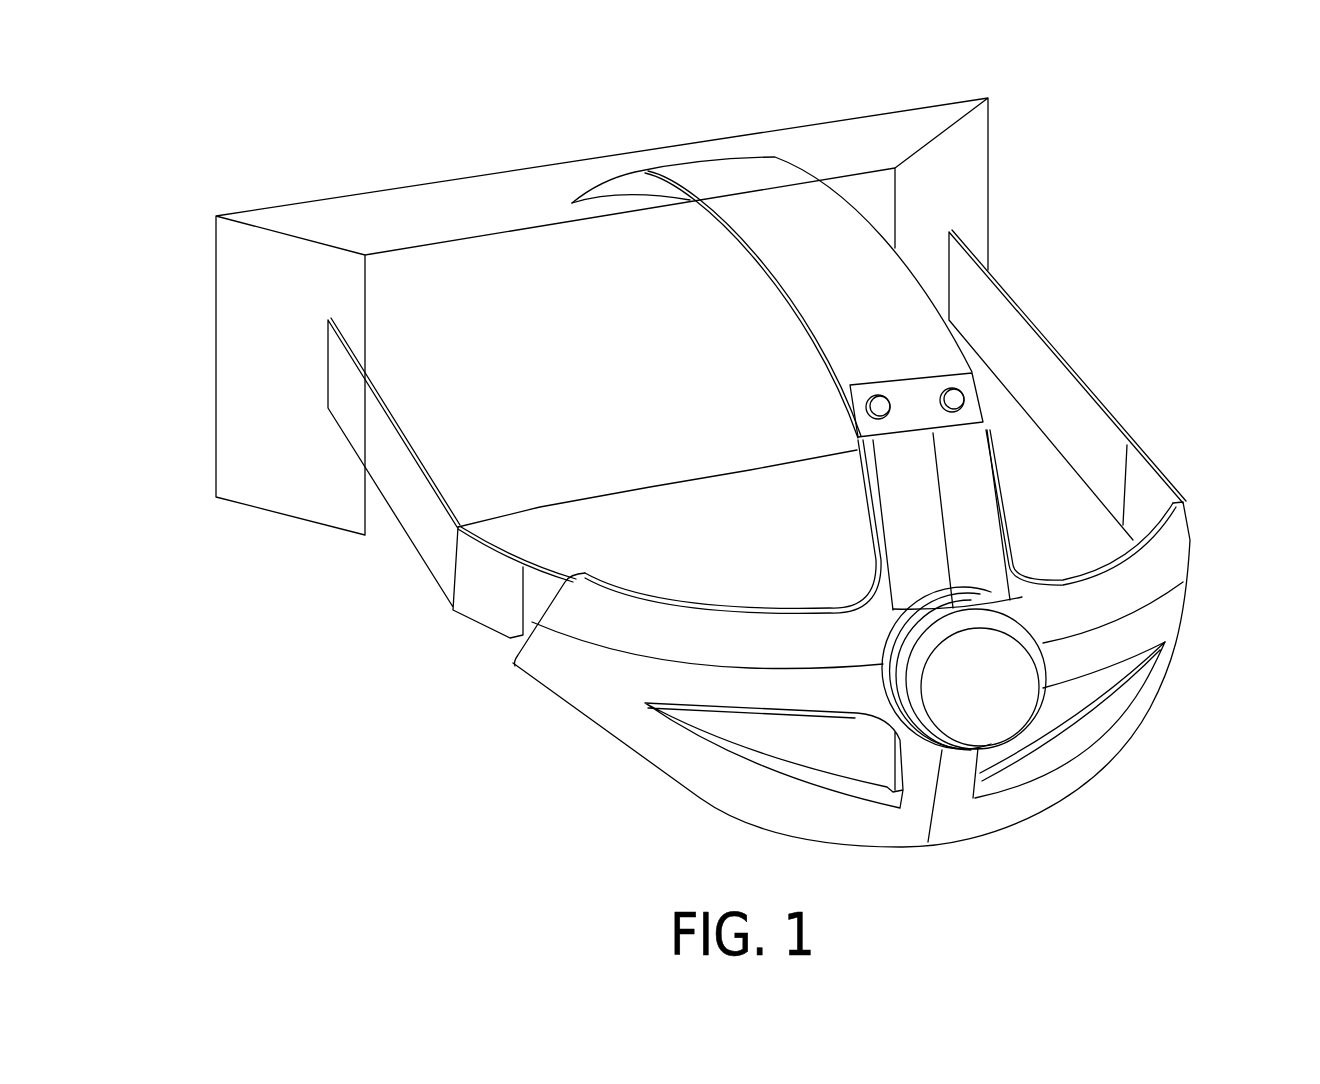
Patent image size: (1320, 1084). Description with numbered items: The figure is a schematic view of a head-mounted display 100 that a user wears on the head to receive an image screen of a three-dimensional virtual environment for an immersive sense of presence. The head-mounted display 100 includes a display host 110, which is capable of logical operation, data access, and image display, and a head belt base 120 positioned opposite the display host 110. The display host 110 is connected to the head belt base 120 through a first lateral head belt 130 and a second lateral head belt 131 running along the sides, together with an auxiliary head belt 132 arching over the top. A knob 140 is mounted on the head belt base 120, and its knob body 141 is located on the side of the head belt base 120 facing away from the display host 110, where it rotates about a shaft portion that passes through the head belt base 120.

The head-mounted display 100 is at (705, 443).
The display host 110 is at (433, 195).
The head belt base 120 is at (787, 700).
The first lateral head belt 130 is at (1077, 405).
The second lateral head belt 131 is at (422, 533).
The auxiliary head belt 132 is at (795, 187).
The knob 140 is at (1086, 703).
The knob body 141 is at (988, 698).